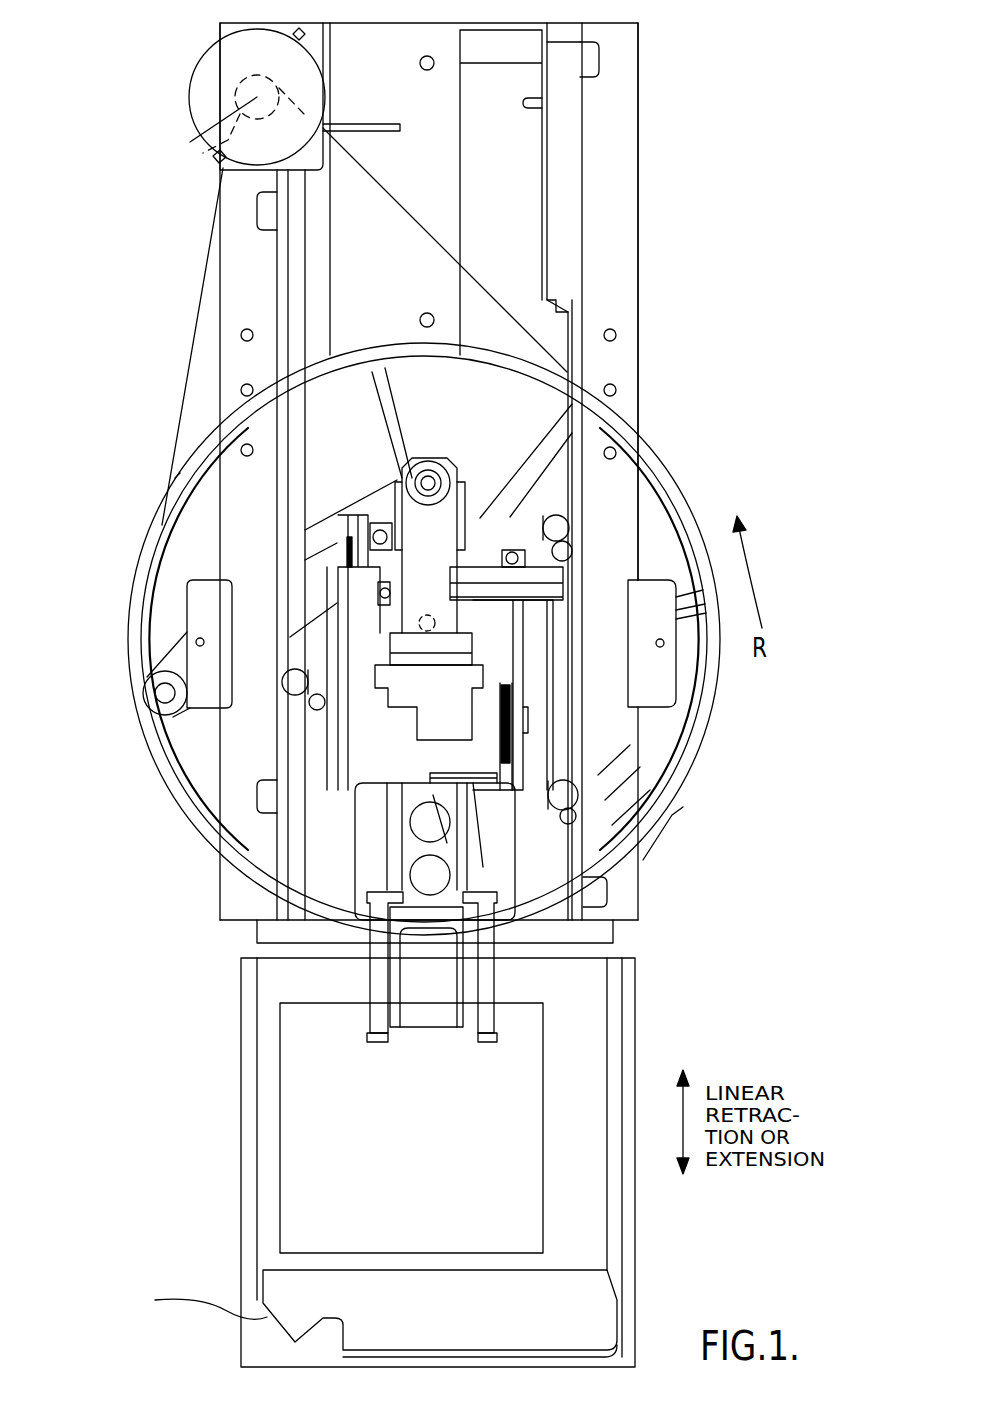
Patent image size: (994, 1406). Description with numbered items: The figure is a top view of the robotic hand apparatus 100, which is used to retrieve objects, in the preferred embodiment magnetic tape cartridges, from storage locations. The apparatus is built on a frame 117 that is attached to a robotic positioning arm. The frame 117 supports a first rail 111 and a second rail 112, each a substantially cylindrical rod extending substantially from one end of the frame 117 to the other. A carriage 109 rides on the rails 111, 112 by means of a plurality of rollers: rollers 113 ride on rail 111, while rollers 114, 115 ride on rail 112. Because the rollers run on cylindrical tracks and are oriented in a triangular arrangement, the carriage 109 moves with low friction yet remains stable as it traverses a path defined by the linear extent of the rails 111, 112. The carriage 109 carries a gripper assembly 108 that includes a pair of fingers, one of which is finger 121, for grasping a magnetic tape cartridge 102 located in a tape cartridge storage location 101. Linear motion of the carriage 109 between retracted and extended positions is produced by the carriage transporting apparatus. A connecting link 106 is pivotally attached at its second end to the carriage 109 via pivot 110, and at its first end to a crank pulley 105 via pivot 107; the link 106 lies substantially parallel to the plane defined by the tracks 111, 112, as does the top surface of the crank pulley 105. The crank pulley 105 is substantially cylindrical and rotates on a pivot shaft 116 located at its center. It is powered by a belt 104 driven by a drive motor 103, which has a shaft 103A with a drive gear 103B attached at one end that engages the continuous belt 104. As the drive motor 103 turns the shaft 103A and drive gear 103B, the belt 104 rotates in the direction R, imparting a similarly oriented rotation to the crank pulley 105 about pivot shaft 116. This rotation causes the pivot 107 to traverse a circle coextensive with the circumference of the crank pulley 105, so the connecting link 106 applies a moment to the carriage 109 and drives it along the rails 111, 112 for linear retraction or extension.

The robotic hand apparatus 100 is at (148, 889).
The tape cartridge storage location 101 is at (243, 1043).
The magnetic tape cartridge 102 is at (580, 1040).
The drive motor 103 is at (193, 107).
The shaft 103A is at (190, 142).
The drive gear 103B is at (203, 153).
The belt 104 is at (203, 262).
The crank pulley 105 is at (157, 507).
The connecting link 106 is at (173, 658).
The pivot 107 is at (160, 694).
The gripper assembly 108 is at (365, 832).
The carriage 109 is at (511, 771).
The pivot 110 is at (429, 481).
The first rail 111 is at (287, 270).
The second rail 112 is at (556, 312).
The rollers 113 is at (298, 720).
The rollers 114 is at (566, 530).
The rollers 115 is at (572, 795).
The pivot shaft 116 is at (427, 631).
The frame 117 is at (620, 268).
The finger 121 is at (427, 1018).